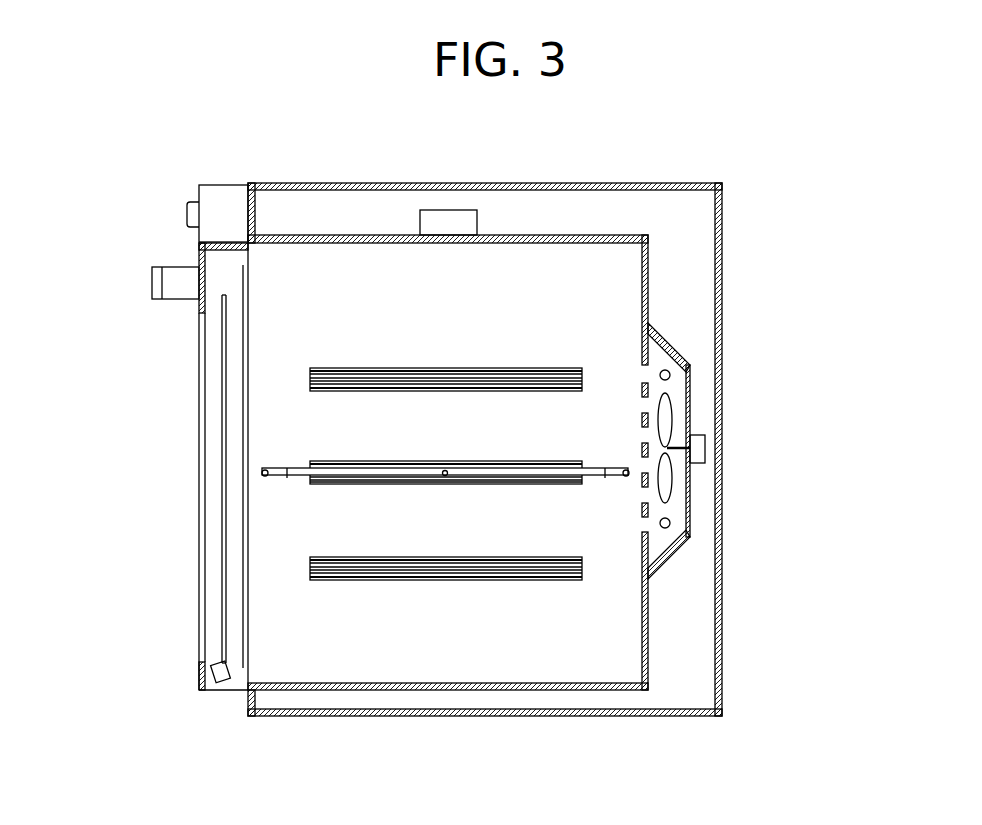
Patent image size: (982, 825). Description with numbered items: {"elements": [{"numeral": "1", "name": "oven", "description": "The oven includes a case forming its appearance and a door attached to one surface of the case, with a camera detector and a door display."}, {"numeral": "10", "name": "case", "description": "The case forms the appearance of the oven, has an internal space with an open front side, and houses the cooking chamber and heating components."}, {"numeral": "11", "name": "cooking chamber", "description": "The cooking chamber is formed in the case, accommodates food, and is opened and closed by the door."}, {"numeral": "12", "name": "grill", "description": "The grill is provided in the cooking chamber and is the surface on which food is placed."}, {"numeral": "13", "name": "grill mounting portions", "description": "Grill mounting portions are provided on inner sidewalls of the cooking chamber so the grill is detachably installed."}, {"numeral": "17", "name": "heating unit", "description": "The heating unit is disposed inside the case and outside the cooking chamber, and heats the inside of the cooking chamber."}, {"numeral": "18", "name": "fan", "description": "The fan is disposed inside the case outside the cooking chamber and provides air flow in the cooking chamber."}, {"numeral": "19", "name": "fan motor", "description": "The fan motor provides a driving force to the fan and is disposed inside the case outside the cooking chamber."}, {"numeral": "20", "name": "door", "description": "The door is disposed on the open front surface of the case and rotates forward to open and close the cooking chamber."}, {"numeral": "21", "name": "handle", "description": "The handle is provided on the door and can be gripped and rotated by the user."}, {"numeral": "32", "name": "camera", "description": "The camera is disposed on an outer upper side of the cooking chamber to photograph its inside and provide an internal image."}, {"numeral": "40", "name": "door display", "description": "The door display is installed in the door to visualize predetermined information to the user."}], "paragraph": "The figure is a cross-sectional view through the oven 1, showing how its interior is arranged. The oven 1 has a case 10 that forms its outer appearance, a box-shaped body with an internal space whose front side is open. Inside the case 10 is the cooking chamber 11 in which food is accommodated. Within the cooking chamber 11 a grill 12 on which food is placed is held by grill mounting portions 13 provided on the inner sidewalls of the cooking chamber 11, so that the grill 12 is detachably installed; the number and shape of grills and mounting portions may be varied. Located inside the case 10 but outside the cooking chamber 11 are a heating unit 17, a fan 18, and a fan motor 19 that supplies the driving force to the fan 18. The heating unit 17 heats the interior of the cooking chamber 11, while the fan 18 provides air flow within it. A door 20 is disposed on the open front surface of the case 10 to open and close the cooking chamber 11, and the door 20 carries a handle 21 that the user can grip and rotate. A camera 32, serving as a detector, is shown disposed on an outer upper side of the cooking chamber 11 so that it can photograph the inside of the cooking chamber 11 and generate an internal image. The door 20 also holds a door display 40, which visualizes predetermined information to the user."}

The cooking appliance 1 is at (697, 143).
The cabinet 10 is at (722, 235).
The cooking chamber rack 11 is at (368, 409).
The rack support rod 12 is at (277, 478).
The lower rack 13 is at (487, 578).
The fan cover 17 is at (688, 364).
The fan 18 is at (667, 487).
The fan motor 19 is at (705, 448).
The door 20 is at (186, 472).
The door handle 21 is at (172, 283).
The controller 32 is at (447, 210).
The sensor 40 is at (215, 675).